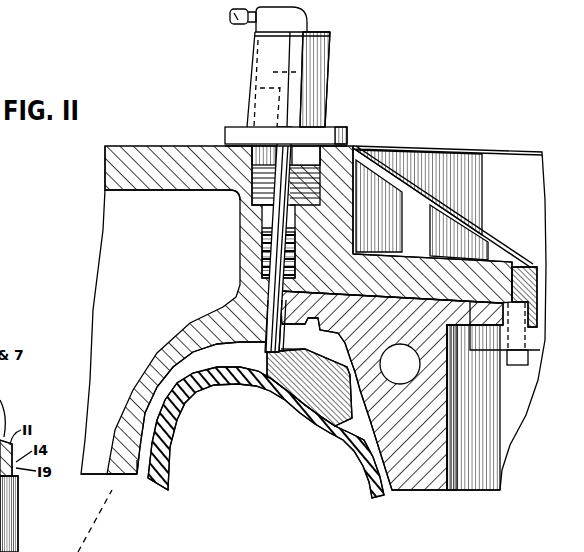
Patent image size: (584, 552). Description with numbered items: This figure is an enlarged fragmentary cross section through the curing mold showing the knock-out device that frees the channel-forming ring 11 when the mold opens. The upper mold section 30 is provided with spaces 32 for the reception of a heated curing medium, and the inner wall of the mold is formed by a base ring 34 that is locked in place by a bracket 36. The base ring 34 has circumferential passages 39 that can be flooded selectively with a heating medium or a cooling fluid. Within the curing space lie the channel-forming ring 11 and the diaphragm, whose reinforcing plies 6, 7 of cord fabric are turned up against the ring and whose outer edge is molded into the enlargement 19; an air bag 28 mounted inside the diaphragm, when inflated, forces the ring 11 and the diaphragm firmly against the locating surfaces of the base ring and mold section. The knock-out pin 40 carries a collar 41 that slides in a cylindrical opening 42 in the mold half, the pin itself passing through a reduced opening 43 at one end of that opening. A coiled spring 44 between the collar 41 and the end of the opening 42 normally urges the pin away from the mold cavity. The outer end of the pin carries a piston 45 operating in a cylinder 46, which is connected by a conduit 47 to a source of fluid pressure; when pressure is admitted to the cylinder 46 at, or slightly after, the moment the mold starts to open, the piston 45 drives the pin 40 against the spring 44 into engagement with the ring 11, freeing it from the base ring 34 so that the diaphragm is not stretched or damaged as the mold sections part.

The upper mold section 30 is at (178, 160).
The spaces for heated curing medium 32 is at (120, 222).
The bracket 36 is at (530, 366).
The passages 39 is at (387, 349).
The base ring 34 is at (498, 433).
The enlargement on the outer edge of the diaphragm 19 is at (316, 343).
The air bag 28 is at (300, 412).
The channel-forming ring 11 is at (270, 360).
The ply 6 is at (148, 482).
The ply 7 is at (147, 486).
The cylindrical opening 42 is at (268, 212).
The collar 41 is at (272, 231).
The coiled spring 44 is at (268, 248).
The reduced opening 43 is at (268, 282).
The knock-out pin 40 is at (268, 298).
The piston 45 is at (272, 73).
The cylinder 46 is at (265, 100).
The conduit 47 is at (238, 19).